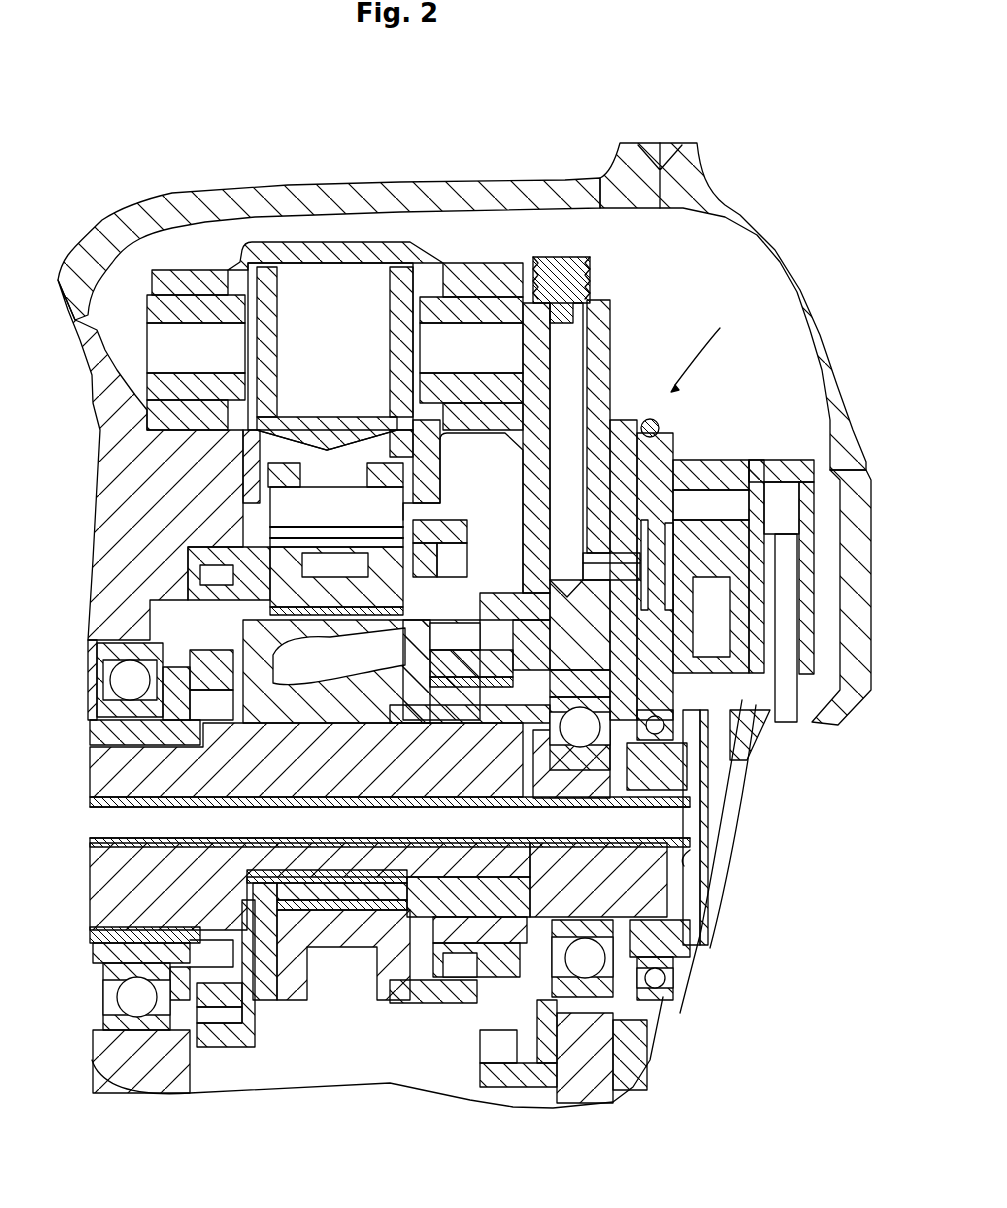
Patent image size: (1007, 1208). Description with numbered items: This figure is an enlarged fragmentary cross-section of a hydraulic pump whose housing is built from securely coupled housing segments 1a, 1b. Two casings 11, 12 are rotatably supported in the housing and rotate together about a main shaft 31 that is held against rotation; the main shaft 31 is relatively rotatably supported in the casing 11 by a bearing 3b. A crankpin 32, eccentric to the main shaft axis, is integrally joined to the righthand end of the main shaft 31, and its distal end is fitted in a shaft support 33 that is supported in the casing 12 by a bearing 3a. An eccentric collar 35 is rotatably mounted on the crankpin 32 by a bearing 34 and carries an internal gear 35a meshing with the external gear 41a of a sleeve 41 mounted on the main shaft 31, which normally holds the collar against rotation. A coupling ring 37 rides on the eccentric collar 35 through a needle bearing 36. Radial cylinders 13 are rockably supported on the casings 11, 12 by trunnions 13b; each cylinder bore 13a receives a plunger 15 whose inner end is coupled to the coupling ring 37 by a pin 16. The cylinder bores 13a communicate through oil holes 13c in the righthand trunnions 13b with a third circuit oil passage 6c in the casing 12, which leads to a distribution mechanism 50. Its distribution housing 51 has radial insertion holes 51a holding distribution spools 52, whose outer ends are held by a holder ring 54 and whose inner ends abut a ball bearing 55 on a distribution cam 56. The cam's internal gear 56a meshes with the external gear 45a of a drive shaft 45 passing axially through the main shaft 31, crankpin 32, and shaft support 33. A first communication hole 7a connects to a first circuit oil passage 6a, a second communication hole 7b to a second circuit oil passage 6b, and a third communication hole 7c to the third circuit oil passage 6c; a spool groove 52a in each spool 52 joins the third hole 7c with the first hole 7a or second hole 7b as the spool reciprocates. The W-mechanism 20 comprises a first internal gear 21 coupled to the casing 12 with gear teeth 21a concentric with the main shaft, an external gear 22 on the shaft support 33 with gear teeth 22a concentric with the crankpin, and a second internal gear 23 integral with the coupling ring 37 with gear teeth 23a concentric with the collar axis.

The housing segment 1a is at (758, 203).
The housing segment 1b is at (480, 190).
The bearing 3a is at (650, 1025).
The bearing 3b is at (165, 1040).
The first circuit oil passage 6a is at (800, 672).
The second circuit oil passage 6b is at (785, 495).
The third circuit oil passage 6c is at (566, 346).
The first communication hole 7a is at (770, 730).
The second communication hole 7b is at (735, 500).
The third communication hole 7c is at (590, 565).
The casing 11 is at (163, 270).
The casing 12 is at (473, 275).
The radial cylinder 13 is at (317, 247).
The cylinder bore 13a is at (392, 417).
The trunnion 13b is at (193, 307).
The oil hole 13c is at (335, 348).
The plunger 15 is at (273, 350).
The pin 16 is at (335, 539).
The W-mechanism 20 is at (610, 377).
The first internal gear 21 is at (540, 1080).
The gear teeth 21a is at (490, 1050).
The external gear 22 is at (435, 977).
The gear teeth 22a is at (493, 977).
The second internal gear 23 is at (495, 465).
The gear teeth 23a is at (448, 578).
The main shaft 31 is at (310, 886).
The crankpin 32 is at (350, 760).
The shaft support 33 is at (537, 880).
The bearing 34 is at (340, 710).
The eccentric collar 35 is at (278, 687).
The internal gear 35a is at (152, 600).
The needle bearing 36 is at (343, 910).
The coupling ring 37 is at (273, 560).
The sleeve 41 is at (119, 745).
The external gear 41a is at (205, 660).
The drive shaft 45 is at (165, 810).
The external gear 45a is at (682, 857).
The distribution mechanism 50 is at (710, 345).
The distribution housing 51 is at (725, 480).
The insertion hole 51a is at (722, 760).
The distribution spool 52 is at (665, 440).
The spool groove 52a is at (683, 550).
The holder ring 54 is at (658, 422).
The ball bearing 55 is at (672, 1000).
The distribution cam 56 is at (683, 940).
The internal gear 56a is at (688, 897).